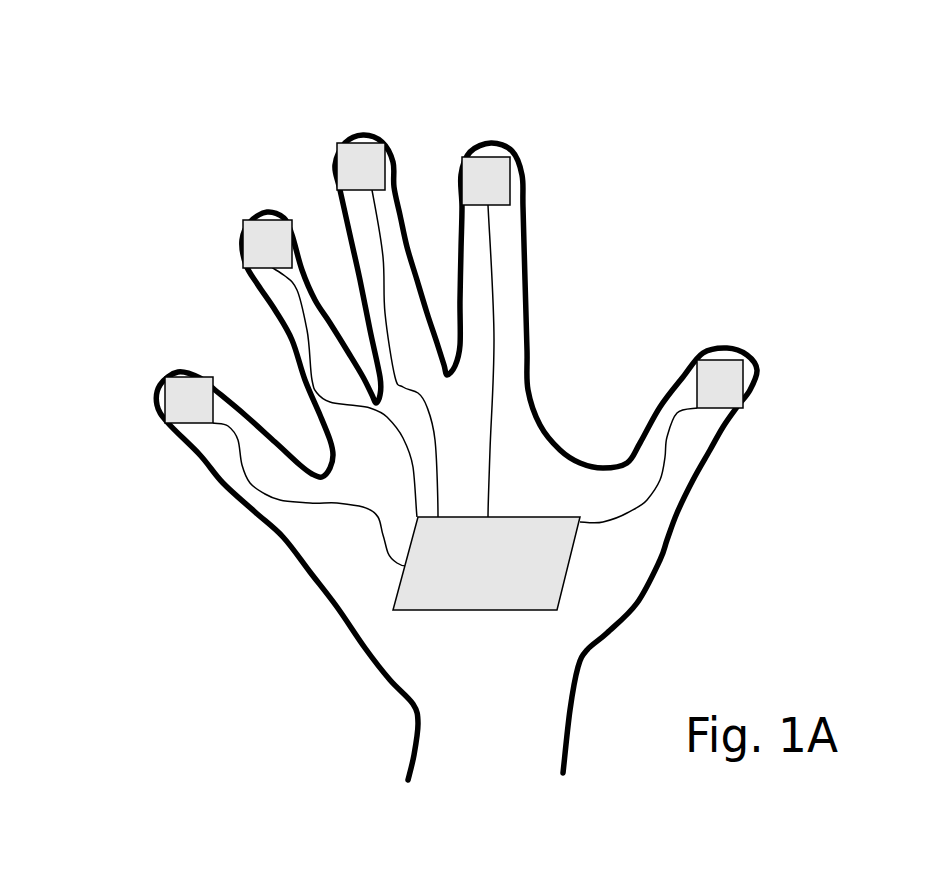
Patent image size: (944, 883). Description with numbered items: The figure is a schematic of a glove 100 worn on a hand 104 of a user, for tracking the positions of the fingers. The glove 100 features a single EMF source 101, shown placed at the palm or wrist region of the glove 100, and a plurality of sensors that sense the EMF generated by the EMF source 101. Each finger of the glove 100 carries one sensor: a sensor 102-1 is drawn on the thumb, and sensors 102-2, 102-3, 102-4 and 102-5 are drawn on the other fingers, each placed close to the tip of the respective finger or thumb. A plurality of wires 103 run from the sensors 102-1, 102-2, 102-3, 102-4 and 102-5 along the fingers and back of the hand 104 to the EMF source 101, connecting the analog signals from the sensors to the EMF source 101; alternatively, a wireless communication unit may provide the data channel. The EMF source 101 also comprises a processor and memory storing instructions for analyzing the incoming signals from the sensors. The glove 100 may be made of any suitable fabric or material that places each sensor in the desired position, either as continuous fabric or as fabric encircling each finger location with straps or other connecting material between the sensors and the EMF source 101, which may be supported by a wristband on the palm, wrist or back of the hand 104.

The glove 100 is at (713, 133).
The EMF source 101 is at (486, 622).
The sensor on the thumb 102-1 is at (726, 420).
The sensor 102-2 is at (521, 182).
The sensor 102-3 is at (359, 133).
The sensor 102-4 is at (233, 245).
The sensor 102-5 is at (165, 366).
The wires 103 is at (337, 512).
The hand 104 is at (370, 828).